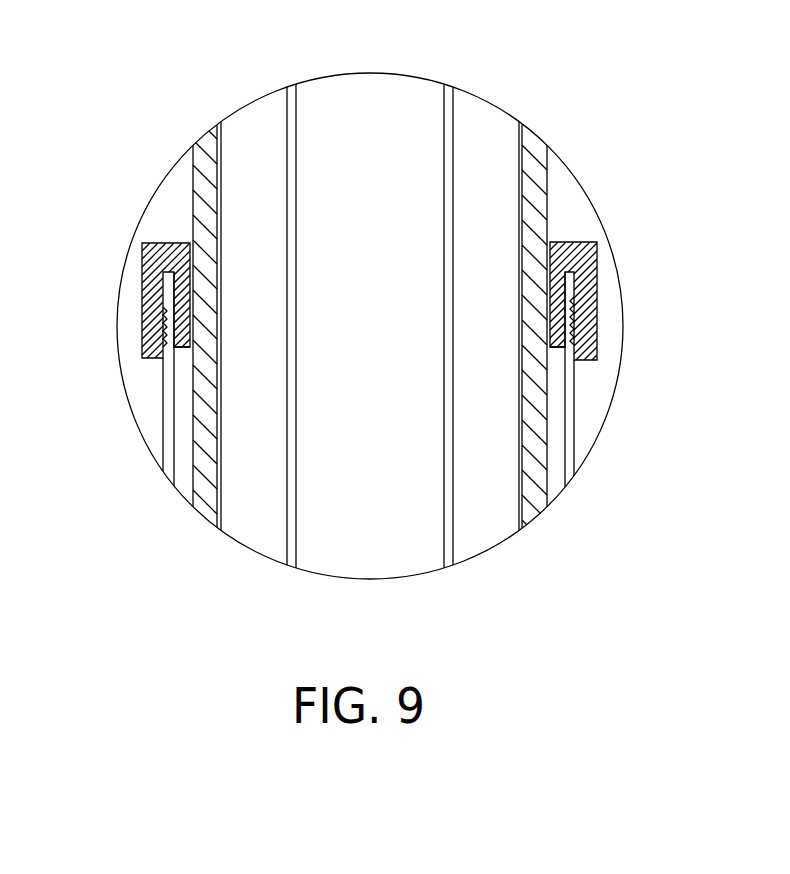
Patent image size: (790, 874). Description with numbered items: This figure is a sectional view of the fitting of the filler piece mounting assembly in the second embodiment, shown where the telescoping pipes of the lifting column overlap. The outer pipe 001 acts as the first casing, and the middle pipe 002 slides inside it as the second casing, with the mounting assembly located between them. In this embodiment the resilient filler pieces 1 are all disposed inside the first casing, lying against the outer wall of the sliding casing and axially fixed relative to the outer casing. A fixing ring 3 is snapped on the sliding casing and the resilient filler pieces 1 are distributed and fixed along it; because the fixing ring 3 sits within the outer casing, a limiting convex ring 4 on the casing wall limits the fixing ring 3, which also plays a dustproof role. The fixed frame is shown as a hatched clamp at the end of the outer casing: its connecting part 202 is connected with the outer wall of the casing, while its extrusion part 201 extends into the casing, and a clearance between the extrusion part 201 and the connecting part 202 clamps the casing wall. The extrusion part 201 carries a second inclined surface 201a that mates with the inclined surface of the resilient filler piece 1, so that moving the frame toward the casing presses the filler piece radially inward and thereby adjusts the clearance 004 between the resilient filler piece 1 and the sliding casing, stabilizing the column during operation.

The resilient filler piece 1 is at (549, 300).
The middle pipe 002 is at (240, 165).
The limiting convex ring 4 is at (167, 352).
The second inclined surface 201a is at (185, 315).
The extrusion part 201 is at (552, 306).
The connecting part 202 is at (590, 338).
The fixing ring 3 is at (552, 350).
The outer pipe 001 is at (167, 465).
The clearance 004 is at (185, 480).